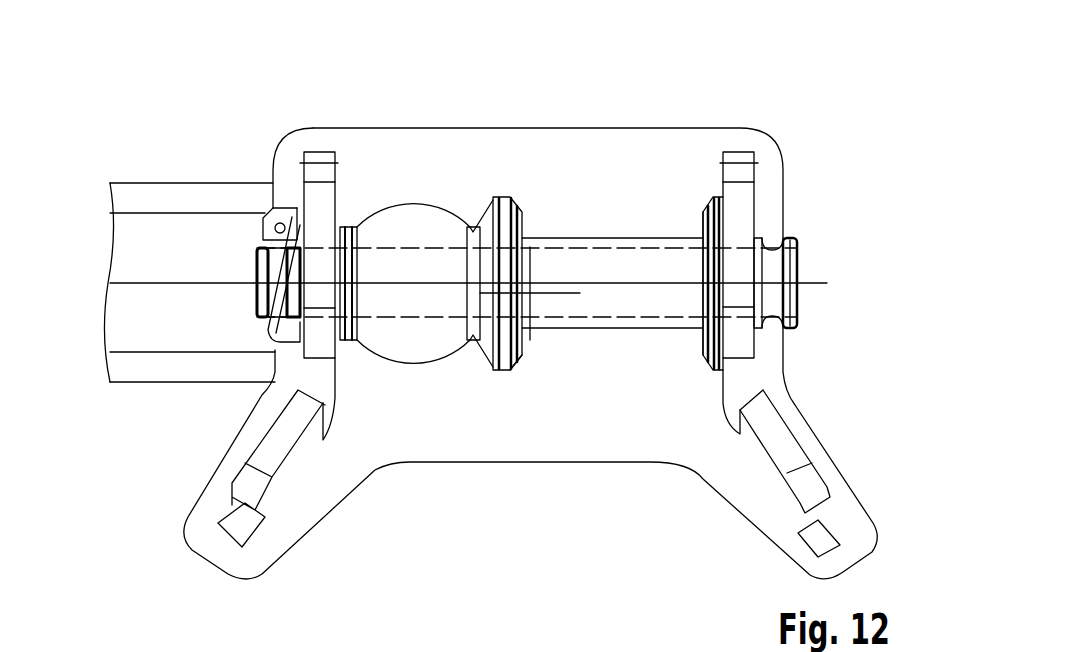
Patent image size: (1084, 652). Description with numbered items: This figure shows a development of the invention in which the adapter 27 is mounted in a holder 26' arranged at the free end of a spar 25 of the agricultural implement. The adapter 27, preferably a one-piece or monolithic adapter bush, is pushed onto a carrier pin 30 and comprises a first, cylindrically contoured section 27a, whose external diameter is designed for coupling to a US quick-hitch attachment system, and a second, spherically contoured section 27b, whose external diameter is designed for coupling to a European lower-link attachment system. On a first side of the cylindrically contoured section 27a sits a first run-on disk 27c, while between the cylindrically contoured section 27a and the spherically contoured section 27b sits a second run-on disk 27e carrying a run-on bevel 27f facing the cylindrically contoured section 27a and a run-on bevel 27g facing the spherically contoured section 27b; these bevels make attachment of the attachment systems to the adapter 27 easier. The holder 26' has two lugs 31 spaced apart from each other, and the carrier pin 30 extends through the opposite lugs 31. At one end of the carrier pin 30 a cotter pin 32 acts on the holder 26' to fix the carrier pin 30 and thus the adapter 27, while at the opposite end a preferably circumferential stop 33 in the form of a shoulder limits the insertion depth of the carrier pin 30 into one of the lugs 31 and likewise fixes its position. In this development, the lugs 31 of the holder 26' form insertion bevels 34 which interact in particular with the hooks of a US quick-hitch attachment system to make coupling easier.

The spar 25 is at (132, 368).
The holder 26' is at (540, 353).
The adapter 27 is at (628, 344).
The cylindrically contoured section 27a is at (617, 263).
The spherically contoured section 27b is at (408, 230).
The first run-on disk 27c is at (707, 207).
The second run-on disk 27e is at (503, 370).
The run-on bevel 27f is at (526, 350).
The run-on bevel 27g is at (483, 199).
The carrier pin 30 is at (566, 236).
The lug 31 is at (318, 203).
The cotter pin 32 is at (287, 357).
The stop 33 is at (806, 263).
The insertion bevel 34 is at (289, 480).